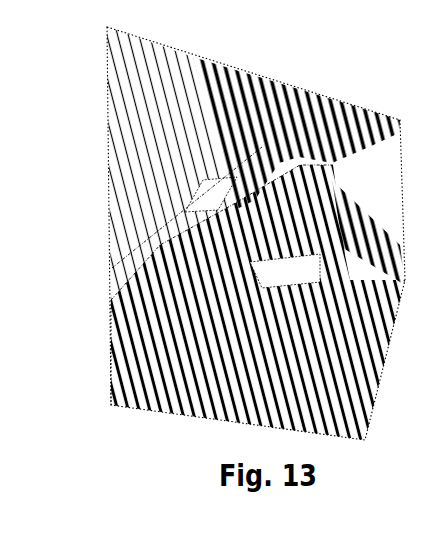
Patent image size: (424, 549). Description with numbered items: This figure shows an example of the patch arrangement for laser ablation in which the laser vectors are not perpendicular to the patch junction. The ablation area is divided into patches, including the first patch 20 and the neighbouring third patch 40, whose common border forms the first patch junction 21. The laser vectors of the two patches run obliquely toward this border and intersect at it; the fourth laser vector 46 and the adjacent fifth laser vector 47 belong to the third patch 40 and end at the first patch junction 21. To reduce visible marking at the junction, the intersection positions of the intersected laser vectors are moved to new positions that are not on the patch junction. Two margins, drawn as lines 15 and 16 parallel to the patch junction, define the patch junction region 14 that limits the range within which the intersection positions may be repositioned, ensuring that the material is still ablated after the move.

The first patch 20 is at (112, 127).
The margin 15 is at (125, 195).
The first patch junction 21 is at (132, 248).
The patch junction region 14 is at (127, 283).
The margin 16 is at (113, 317).
The fourth laser vector 46 is at (163, 328).
The third patch 40 is at (123, 363).
The fifth laser vector 47 is at (183, 296).